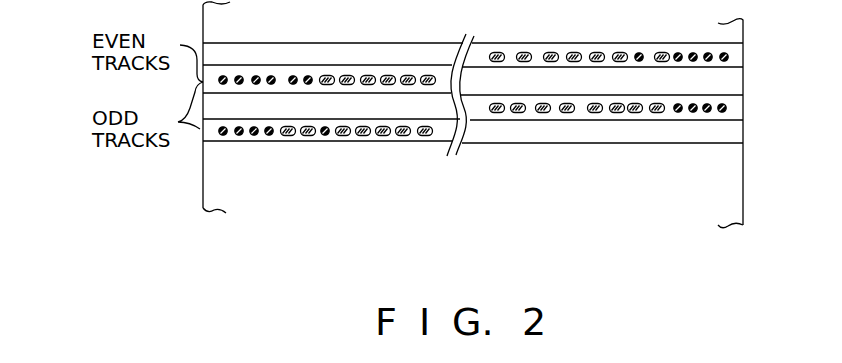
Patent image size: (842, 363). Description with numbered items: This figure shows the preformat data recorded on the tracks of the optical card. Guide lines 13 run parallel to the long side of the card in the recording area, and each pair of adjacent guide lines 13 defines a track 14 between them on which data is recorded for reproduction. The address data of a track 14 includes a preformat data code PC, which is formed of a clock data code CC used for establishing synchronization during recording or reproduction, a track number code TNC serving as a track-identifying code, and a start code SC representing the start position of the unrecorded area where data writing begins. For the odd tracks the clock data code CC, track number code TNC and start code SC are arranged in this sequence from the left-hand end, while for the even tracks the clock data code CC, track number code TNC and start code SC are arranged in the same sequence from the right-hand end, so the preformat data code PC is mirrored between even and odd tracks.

The guide line 13 is at (328, 64).
The track 14 is at (747, 57).
The clock data code CC is at (272, 147).
The track number code TNC is at (350, 147).
The start code SC is at (430, 147).
The preformat data code PC is at (422, 184).